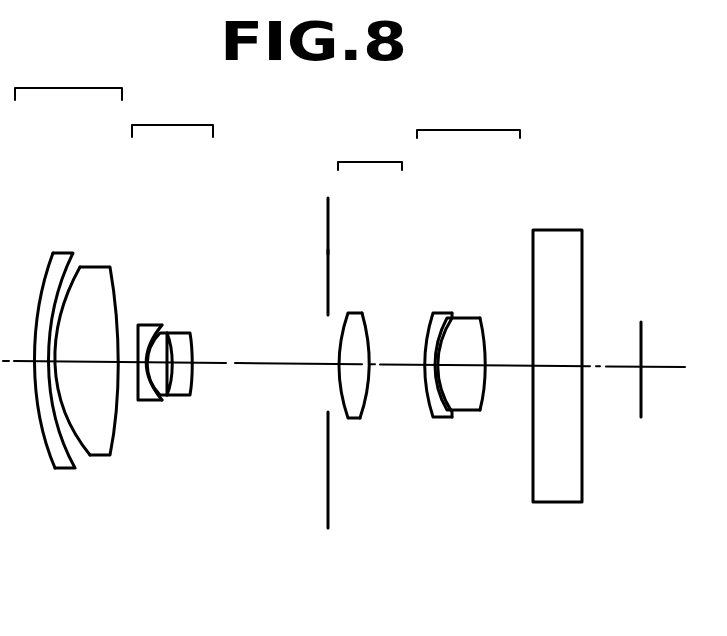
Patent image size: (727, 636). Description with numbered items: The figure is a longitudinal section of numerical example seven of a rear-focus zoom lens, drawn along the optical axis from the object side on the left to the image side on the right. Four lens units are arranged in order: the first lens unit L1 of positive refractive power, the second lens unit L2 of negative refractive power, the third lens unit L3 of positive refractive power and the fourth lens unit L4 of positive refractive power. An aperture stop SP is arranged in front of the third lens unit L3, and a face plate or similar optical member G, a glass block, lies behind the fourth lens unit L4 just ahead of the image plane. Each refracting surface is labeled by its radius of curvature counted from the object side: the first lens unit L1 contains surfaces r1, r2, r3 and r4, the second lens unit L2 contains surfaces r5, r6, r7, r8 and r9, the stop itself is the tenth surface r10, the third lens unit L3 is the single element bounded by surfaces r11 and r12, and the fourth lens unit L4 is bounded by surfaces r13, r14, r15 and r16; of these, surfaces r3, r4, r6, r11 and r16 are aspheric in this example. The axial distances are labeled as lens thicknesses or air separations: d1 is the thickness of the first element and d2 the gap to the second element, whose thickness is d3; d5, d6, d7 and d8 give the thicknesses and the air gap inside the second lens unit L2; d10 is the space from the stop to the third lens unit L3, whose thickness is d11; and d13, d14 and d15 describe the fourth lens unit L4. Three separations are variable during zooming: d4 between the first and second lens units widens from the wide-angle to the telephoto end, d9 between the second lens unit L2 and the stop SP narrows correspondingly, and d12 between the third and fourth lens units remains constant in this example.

The first lens unit L1 is at (68, 78).
The second lens unit L2 is at (172, 113).
The third lens unit L3 is at (370, 148).
The fourth lens unit L4 is at (468, 116).
The aperture stop SP is at (328, 252).
The face plate G is at (572, 230).
The first lens surface r1 is at (38, 290).
The second lens surface r2 is at (57, 292).
The third lens surface r3 is at (80, 267).
The fourth lens surface r4 is at (118, 277).
The fifth lens surface r5 is at (138, 325).
The sixth lens surface r6 is at (162, 325).
The seventh lens surface r7 is at (163, 333).
The eighth lens surface r8 is at (170, 333).
The ninth lens surface r9 is at (191, 333).
The stop surface r10 is at (300, 200).
The eleventh lens surface r11 is at (348, 313).
The twelfth lens surface r12 is at (363, 313).
The thirteenth lens surface r13 is at (432, 333).
The fourteenth lens surface r14 is at (447, 318).
The fifteenth lens surface r15 is at (452, 320).
The sixteenth lens surface r16 is at (483, 330).
The first lens thickness d1 is at (42, 362).
The second air separation d2 is at (52, 362).
The third lens thickness d3 is at (87, 362).
The fourth air separation d4 is at (127, 362).
The fifth lens thickness d5 is at (142, 363).
The sixth air separation d6 is at (152, 363).
The seventh lens thickness d7 is at (163, 363).
The eighth lens thickness d8 is at (182, 363).
The ninth air separation d9 is at (258, 364).
The tenth air separation d10 is at (333, 364).
The eleventh lens thickness d11 is at (354, 364).
The twelfth air separation d12 is at (397, 364).
The thirteenth lens thickness d13 is at (431, 365).
The fourteenth air separation d14 is at (446, 365).
The fifteenth lens thickness d15 is at (460, 366).